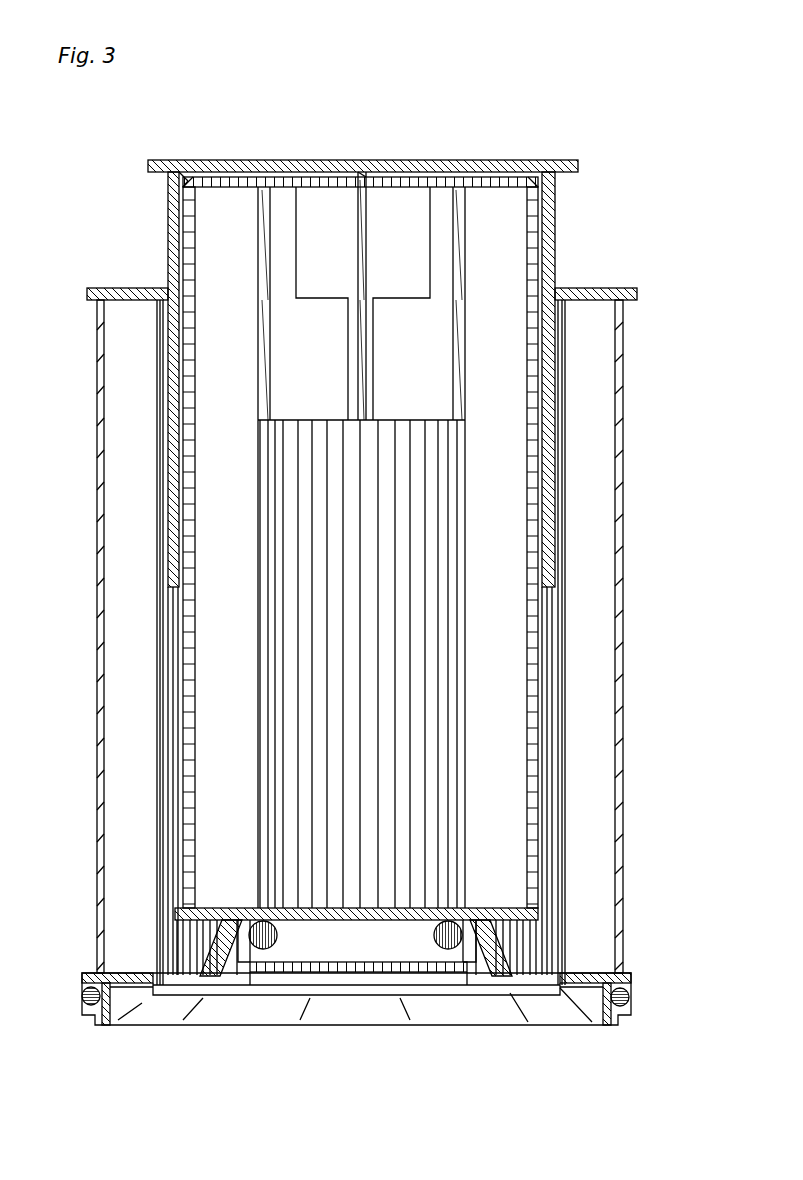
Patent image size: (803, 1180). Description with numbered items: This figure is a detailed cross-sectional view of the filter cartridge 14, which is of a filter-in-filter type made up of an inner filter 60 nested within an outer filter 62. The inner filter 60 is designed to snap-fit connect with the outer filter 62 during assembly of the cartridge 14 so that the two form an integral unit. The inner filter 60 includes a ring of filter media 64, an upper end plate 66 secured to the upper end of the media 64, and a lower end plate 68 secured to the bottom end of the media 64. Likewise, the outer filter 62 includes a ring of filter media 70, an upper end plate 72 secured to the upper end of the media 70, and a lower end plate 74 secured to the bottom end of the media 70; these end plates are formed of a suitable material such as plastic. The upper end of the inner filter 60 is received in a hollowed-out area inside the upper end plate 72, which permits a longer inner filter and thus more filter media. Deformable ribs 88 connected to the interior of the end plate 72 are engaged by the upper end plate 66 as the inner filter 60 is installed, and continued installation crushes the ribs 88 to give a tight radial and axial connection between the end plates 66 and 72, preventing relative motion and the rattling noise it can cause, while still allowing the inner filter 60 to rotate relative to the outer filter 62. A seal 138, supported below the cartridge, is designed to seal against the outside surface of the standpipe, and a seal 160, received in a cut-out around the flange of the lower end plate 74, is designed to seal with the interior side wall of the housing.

The filter cartridge 14 is at (644, 448).
The inner filter 60 is at (509, 751).
The outer filter 62 is at (597, 585).
The filter media 64 is at (208, 745).
The upper end plate 66 is at (483, 186).
The lower end plate 68 is at (227, 923).
The filter media 70 is at (118, 637).
The upper end plate 72 is at (297, 161).
The lower end plate 74 is at (582, 982).
The deformable ribs 88 is at (184, 189).
The seal 138 is at (283, 940).
The seal 160 is at (629, 1001).